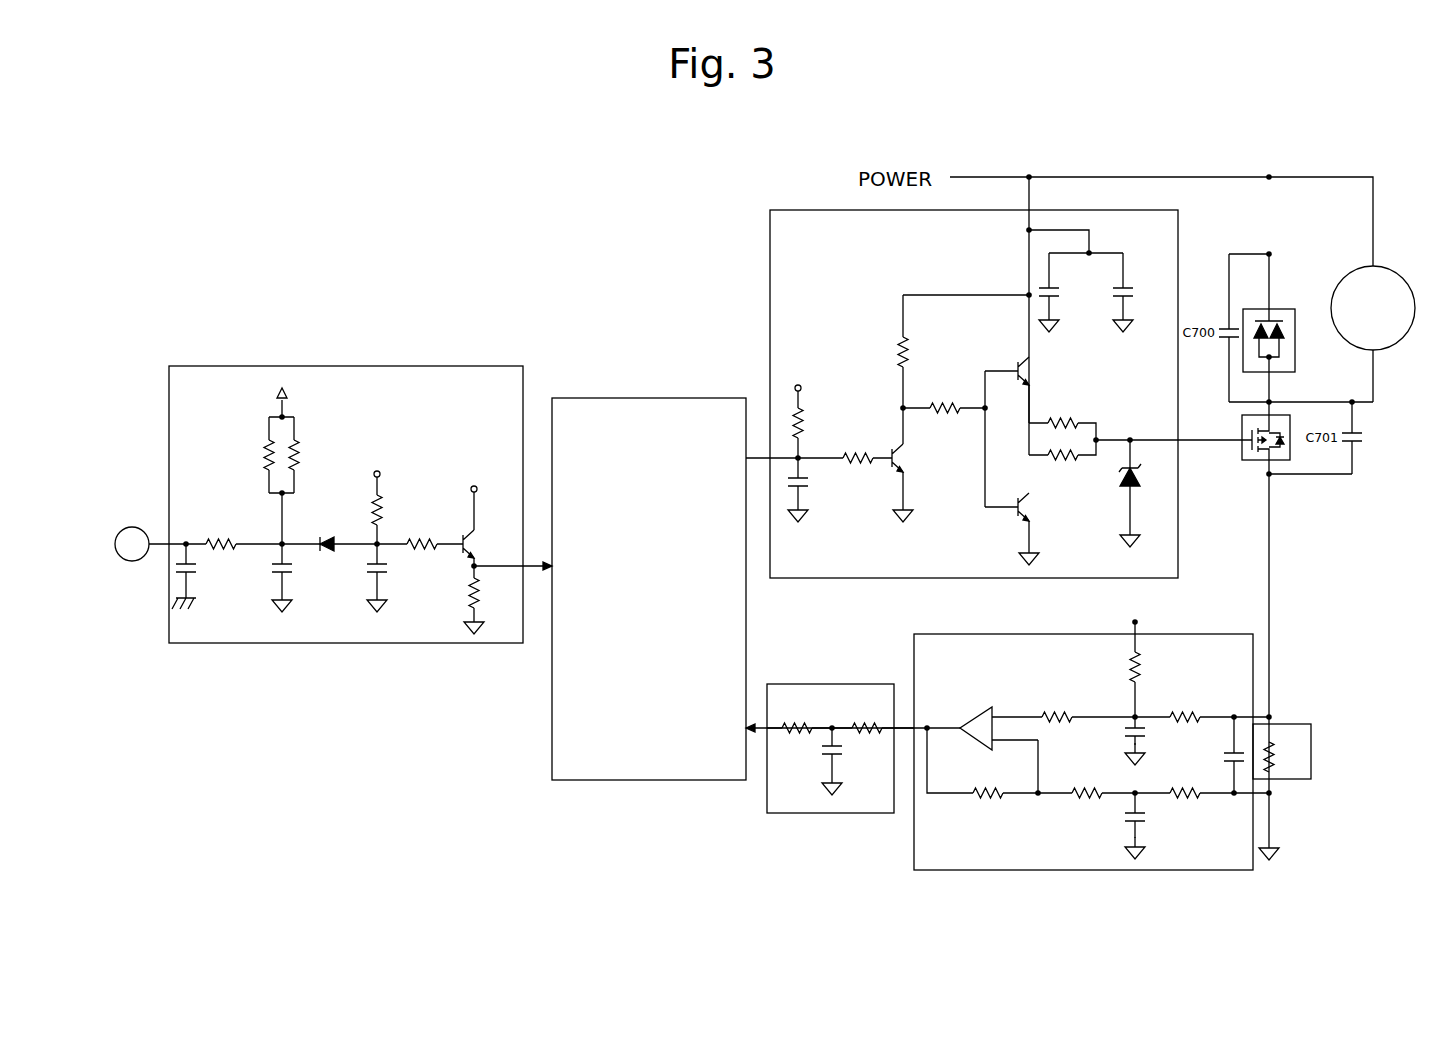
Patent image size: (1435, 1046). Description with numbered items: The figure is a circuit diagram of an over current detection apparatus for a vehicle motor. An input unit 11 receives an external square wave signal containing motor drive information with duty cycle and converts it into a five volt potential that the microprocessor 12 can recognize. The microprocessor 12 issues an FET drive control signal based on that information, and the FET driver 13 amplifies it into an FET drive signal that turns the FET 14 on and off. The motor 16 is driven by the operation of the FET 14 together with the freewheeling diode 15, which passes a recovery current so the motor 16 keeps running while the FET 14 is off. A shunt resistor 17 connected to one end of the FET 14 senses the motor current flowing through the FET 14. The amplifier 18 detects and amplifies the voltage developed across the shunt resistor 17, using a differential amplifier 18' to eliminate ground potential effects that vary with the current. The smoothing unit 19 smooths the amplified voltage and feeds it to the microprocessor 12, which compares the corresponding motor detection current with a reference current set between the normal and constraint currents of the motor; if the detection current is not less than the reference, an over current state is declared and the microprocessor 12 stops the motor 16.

The input unit 11 is at (396, 366).
The microprocessor 12 is at (675, 398).
The FET driver 13 is at (767, 281).
The FET 14 is at (1291, 452).
The freewheeling diode 15 is at (1285, 309).
The motor 16 is at (1397, 272).
The shunt resistor 17 is at (1288, 724).
The amplifier 18 is at (1009, 724).
The differential amplifier 18' is at (877, 704).
The smoothing unit 19 is at (843, 684).